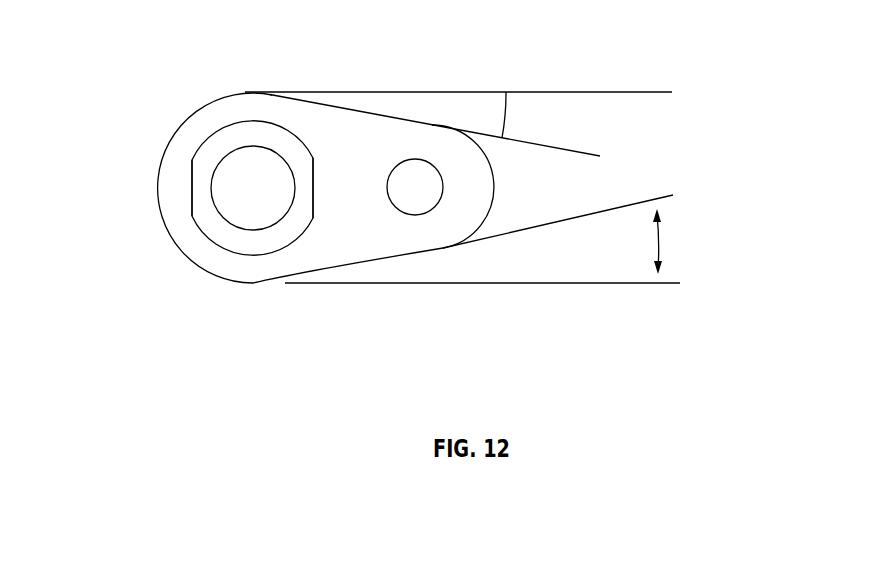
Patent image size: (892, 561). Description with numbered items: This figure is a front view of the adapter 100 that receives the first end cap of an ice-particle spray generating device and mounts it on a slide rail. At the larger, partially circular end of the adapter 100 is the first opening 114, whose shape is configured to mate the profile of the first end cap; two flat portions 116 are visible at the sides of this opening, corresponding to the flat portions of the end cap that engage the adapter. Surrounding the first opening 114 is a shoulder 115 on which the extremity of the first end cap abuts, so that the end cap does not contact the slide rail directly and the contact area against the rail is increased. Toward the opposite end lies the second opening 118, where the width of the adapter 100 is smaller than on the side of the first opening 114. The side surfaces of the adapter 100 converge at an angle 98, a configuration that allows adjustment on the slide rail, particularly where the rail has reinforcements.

The angle 98 is at (610, 183).
The adapter 100 is at (366, 111).
The first opening 114 is at (236, 212).
The shoulder 115 is at (240, 132).
The flat portions 116 is at (315, 173).
The second opening 118 is at (412, 205).